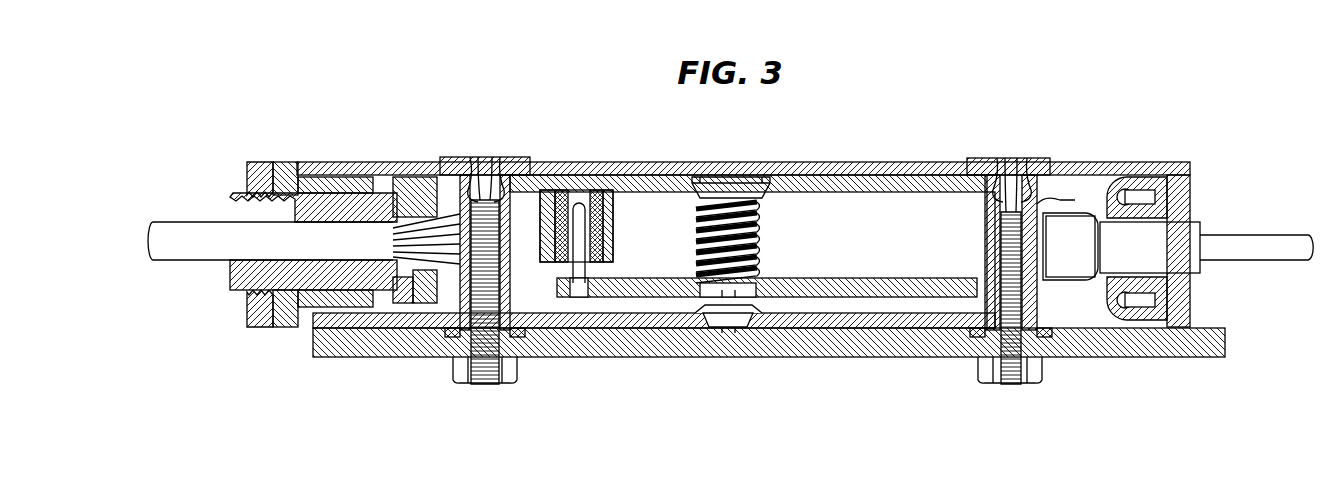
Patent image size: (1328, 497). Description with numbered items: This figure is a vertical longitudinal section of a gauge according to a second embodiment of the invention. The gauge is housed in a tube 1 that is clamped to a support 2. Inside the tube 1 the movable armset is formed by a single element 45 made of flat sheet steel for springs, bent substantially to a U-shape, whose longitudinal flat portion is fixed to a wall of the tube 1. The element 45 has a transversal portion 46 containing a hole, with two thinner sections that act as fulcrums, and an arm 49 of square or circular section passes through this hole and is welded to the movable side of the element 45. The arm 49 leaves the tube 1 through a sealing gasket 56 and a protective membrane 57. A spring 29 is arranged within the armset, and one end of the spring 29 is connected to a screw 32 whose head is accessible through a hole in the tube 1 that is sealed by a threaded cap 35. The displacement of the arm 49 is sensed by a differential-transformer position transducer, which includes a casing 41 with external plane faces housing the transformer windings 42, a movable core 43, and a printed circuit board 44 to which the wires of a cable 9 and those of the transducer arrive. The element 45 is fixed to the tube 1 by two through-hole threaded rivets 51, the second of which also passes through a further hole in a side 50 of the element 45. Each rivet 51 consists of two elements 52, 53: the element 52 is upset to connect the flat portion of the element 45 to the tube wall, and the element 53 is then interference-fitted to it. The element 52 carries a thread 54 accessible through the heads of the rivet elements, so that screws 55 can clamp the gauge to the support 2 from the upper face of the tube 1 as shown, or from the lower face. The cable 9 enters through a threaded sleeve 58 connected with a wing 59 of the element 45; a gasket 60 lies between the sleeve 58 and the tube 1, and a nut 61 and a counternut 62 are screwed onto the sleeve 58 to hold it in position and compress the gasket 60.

The tube 1 is at (838, 162).
The support 2 is at (750, 357).
The cable 9 is at (173, 222).
The spring 29 is at (762, 212).
The screw 32 is at (760, 283).
The threaded cap 35 is at (720, 328).
The casing 41 is at (608, 247).
The transformer windings 42 is at (608, 222).
The movable core 43 is at (588, 278).
The printed circuit board 44 is at (548, 190).
The element 45 is at (855, 192).
The transversal portion 46 is at (1070, 200).
The arm 49 is at (1268, 237).
The side 50 is at (874, 278).
The through hole threaded rivet 51 is at (485, 140).
The rivet element 52 is at (470, 160).
The rivet element 53 is at (528, 340).
The thread 54 is at (502, 160).
The screw 55 is at (485, 388).
The sealing gasket 56 is at (1192, 283).
The protective membrane 57 is at (1192, 195).
The threaded sleeve 58 is at (387, 303).
The wing 59 is at (404, 303).
The gasket 60 is at (305, 162).
The nut 61 is at (284, 330).
The counternut 62 is at (258, 330).